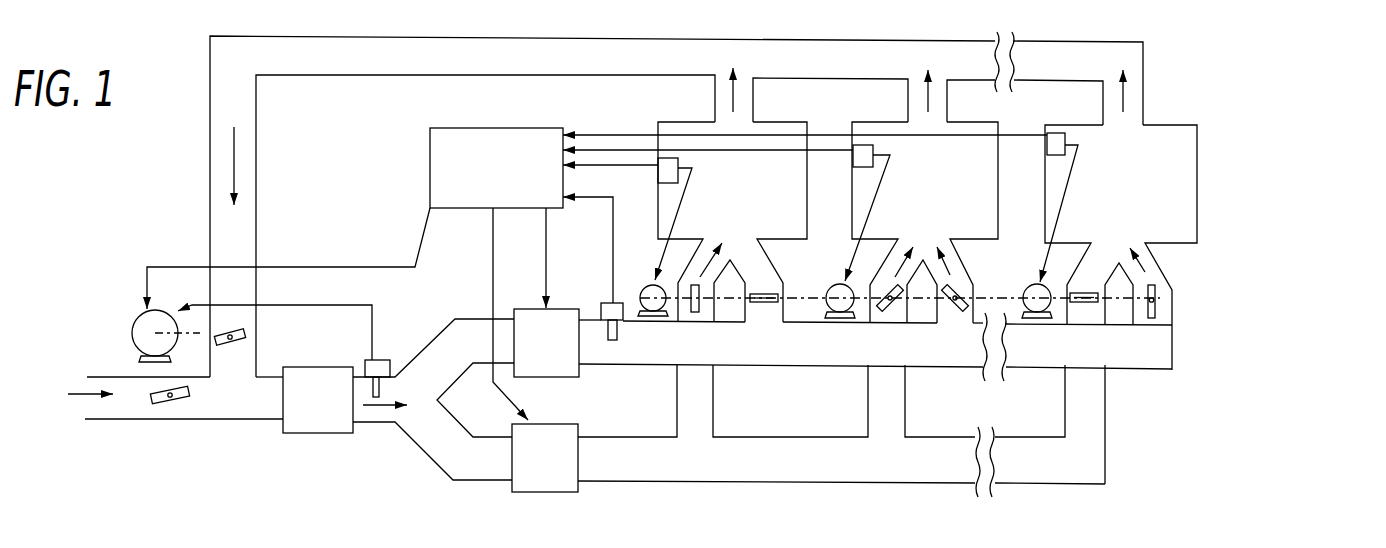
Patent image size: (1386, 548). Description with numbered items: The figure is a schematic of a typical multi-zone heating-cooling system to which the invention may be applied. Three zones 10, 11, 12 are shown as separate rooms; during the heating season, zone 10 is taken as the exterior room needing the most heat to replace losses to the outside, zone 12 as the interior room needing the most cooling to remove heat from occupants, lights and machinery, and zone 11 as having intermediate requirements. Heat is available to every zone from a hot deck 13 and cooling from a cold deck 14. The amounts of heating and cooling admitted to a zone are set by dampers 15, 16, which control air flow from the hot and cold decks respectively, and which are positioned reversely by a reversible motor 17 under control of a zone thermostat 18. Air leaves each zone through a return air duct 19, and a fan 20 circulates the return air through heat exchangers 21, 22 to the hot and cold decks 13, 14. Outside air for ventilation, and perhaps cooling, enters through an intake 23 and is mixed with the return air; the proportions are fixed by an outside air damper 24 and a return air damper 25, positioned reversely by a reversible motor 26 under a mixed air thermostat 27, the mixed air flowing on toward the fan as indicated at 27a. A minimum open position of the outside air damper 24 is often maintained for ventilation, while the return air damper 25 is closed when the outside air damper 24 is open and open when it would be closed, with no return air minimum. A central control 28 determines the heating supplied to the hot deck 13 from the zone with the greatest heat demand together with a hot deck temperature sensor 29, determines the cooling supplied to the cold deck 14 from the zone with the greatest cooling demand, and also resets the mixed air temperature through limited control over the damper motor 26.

The zone 10 is at (1106, 203).
The zone 11 is at (920, 203).
The zone 12 is at (718, 200).
The hot deck 13 is at (796, 360).
The cold deck 14 is at (783, 470).
The damper 15 is at (1157, 312).
The damper 16 is at (1093, 303).
The reversible motor 17 is at (1026, 288).
The zone thermostat 18 is at (1058, 133).
The return air duct 19 is at (610, 68).
The fan 20 is at (301, 411).
The heat exchanger 21 is at (546, 343).
The heat exchanger 22 is at (545, 458).
The intake 23 is at (90, 418).
The outside air damper 24 is at (180, 401).
The return air damper 25 is at (237, 340).
The reversible motor 26 is at (136, 330).
The mixed air thermostat 27 is at (390, 362).
The flow direction 27a is at (386, 416).
The central control 28 is at (479, 207).
The hot deck temperature sensor 29 is at (609, 303).